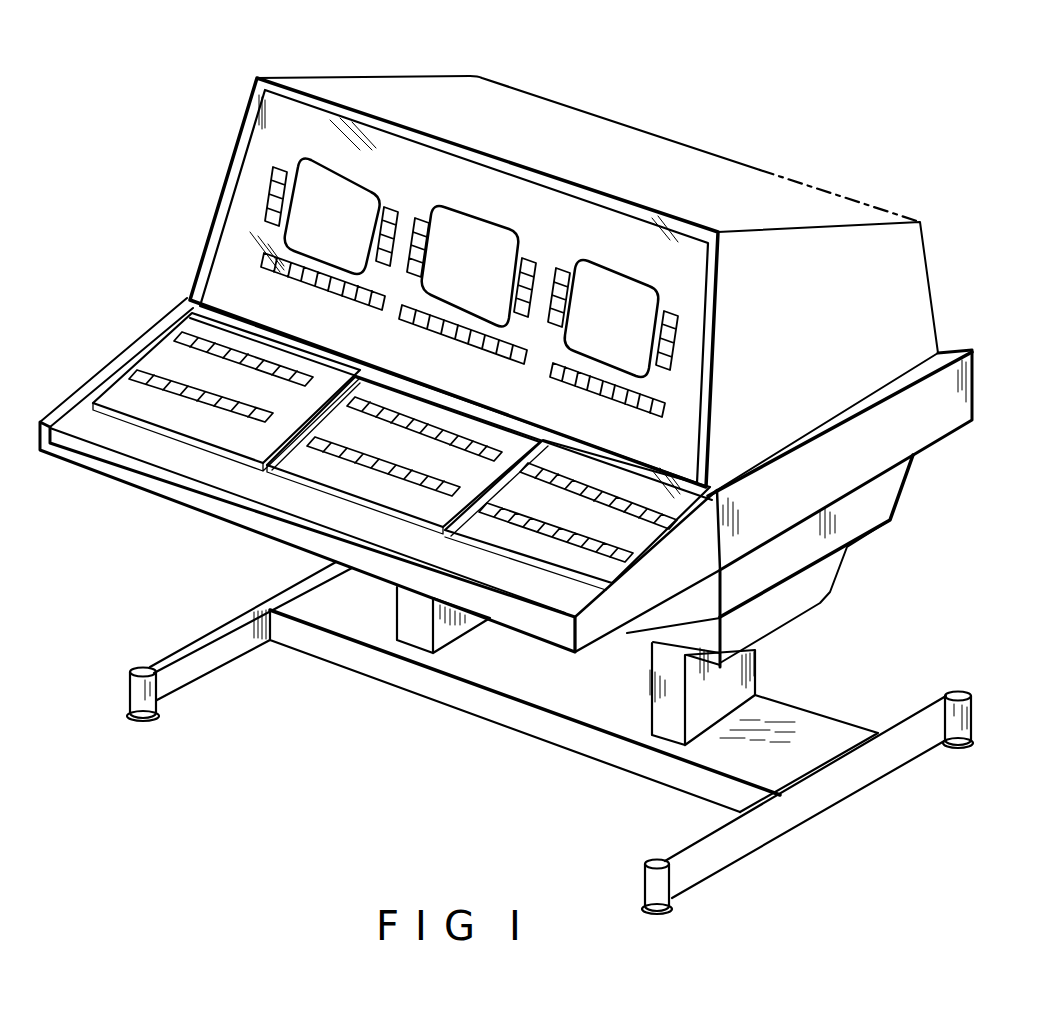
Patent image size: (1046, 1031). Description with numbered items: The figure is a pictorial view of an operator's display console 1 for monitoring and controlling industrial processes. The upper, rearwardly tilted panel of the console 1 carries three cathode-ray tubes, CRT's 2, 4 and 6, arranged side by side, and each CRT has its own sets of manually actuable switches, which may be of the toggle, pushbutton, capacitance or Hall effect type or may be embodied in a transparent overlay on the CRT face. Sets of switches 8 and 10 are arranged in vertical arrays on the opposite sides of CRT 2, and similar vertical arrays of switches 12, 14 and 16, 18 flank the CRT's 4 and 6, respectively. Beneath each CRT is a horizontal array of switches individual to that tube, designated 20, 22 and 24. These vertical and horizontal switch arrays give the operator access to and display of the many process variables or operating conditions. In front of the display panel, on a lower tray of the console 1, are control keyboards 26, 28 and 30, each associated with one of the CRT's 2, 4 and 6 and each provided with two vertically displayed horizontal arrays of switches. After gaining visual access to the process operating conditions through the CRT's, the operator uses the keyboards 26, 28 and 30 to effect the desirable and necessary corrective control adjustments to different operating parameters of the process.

The console 1 is at (317, 65).
The CRT 2 is at (315, 232).
The CRT 4 is at (455, 284).
The CRT 6 is at (589, 334).
The set of switches 8 is at (272, 170).
The set of switches 10 is at (392, 208).
The vertical array of switches 12 is at (422, 218).
The vertical array of switches 14 is at (544, 238).
The vertical array of switches 16 is at (562, 268).
The vertical array of switches 18 is at (672, 312).
The horizontal array of switches 20 is at (338, 300).
The horizontal array of switches 22 is at (488, 349).
The horizontal array of switches 24 is at (630, 408).
The control keyboard 26 is at (113, 392).
The control keyboard 28 is at (360, 474).
The control keyboard 30 is at (590, 570).